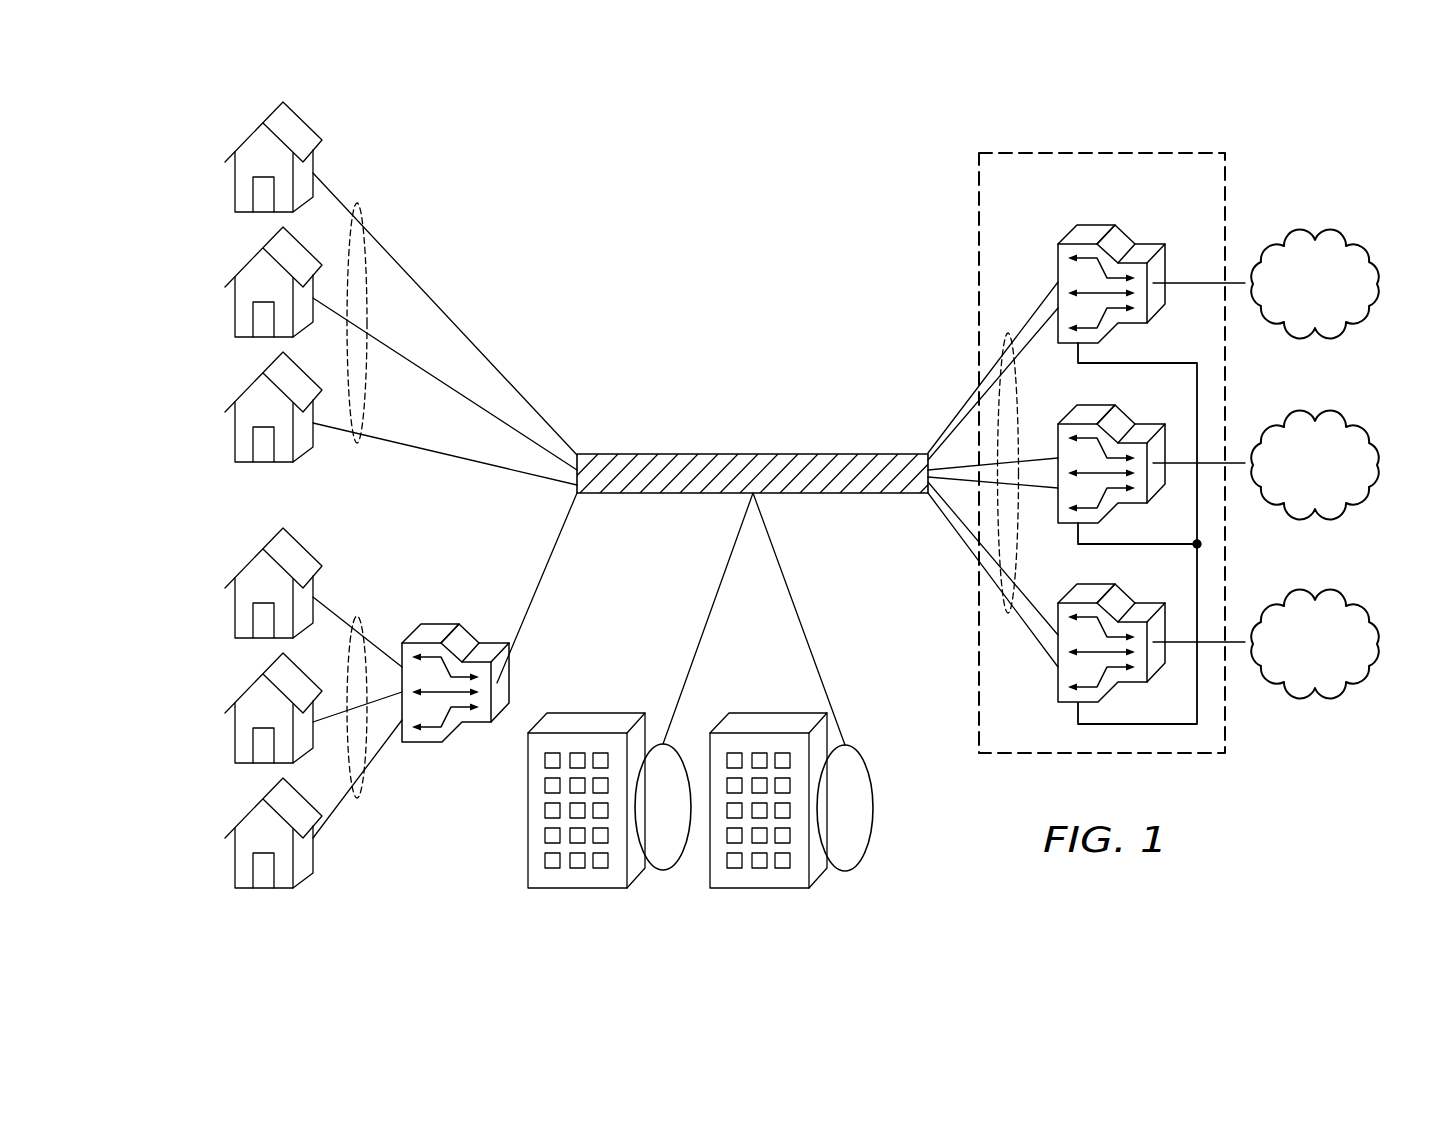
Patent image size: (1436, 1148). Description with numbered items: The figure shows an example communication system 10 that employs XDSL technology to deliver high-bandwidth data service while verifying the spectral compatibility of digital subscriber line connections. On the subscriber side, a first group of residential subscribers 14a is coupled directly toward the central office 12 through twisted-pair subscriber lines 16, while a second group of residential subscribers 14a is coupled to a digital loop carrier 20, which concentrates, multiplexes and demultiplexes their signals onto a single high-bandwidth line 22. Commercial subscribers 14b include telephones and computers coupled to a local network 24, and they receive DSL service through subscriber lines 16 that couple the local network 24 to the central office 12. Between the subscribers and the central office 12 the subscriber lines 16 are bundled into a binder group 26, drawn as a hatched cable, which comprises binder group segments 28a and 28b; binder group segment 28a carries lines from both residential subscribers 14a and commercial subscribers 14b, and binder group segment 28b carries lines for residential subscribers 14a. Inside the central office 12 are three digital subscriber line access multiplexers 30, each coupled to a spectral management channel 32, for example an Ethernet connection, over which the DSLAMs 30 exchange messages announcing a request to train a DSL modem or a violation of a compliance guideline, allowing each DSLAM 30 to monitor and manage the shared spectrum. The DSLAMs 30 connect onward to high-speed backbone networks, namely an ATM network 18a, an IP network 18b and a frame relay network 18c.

The communication system 10 is at (650, 184).
The central office 12 is at (1110, 153).
The residential subscribers 14a is at (222, 142).
The commercial subscribers 14b is at (768, 723).
The twisted-pair subscriber lines 16 is at (358, 205).
The Asynchronous Transfer Mode (ATM) network 18a is at (1313, 232).
The Internet Protocol (IP) network 18b is at (1313, 413).
The frame relay network 18c is at (1313, 695).
The digital loop carrier (DLC) 20 is at (422, 743).
The high-bandwidth line 22 is at (545, 566).
The local network 24 is at (873, 807).
The binder group 26 is at (728, 436).
The binder group segment 28a is at (654, 508).
The binder group segment 28b is at (853, 510).
The digital subscriber line access multiplexers (DSLAM) 30 is at (1058, 255).
The spectral management channel 32 is at (1172, 364).